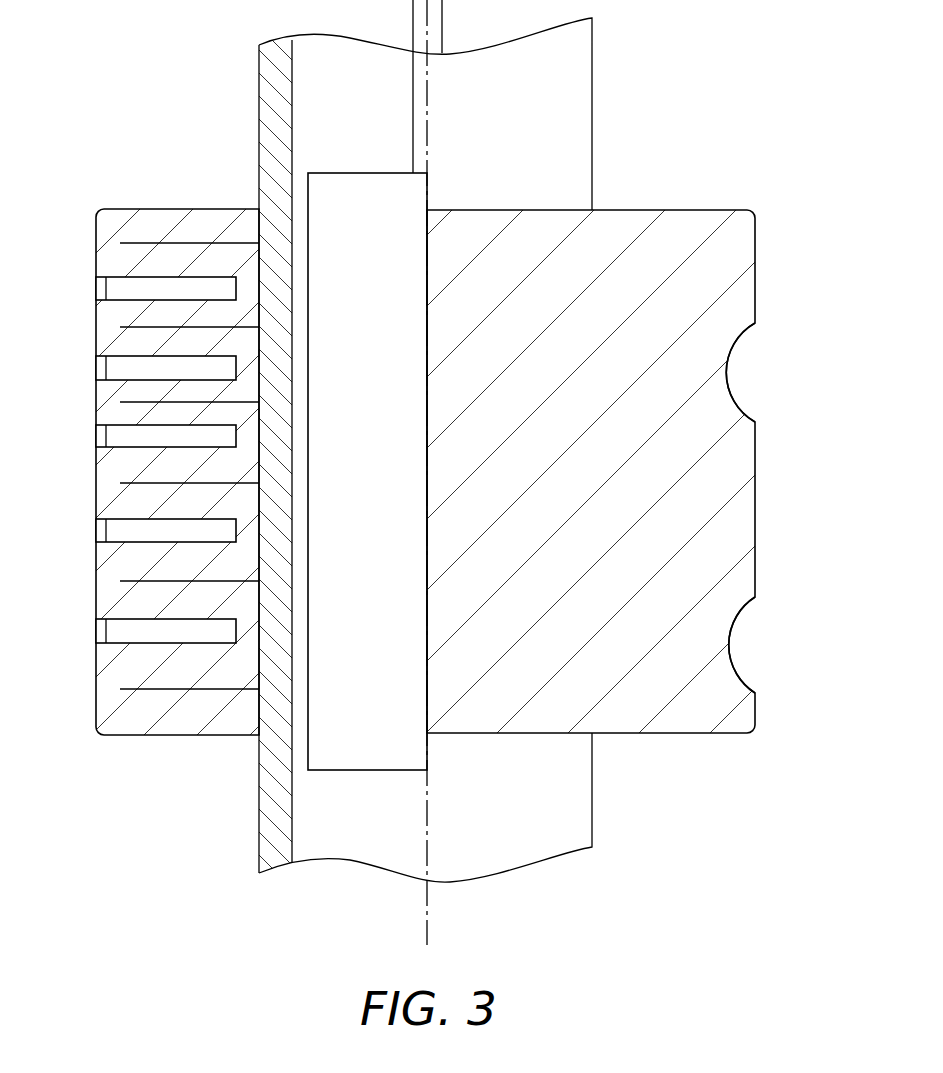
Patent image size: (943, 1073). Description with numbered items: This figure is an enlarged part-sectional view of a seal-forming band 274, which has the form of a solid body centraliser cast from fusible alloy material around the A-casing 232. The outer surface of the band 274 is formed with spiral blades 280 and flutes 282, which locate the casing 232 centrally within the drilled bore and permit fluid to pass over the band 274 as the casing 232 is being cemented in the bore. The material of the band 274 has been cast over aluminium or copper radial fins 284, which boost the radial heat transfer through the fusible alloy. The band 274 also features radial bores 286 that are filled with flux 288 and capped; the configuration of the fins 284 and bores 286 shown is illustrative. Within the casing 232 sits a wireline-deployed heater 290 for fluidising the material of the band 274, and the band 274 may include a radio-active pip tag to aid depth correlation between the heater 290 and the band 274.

The A-casing 232 is at (592, 30).
The seal-forming band 274 is at (632, 431).
The spiral blades 280 is at (632, 471).
The flutes 282 is at (730, 372).
The radial fins 284 is at (142, 690).
The radial bores 286 is at (120, 643).
The flux 288 is at (147, 472).
The wireline-deployed heater 290 is at (340, 770).